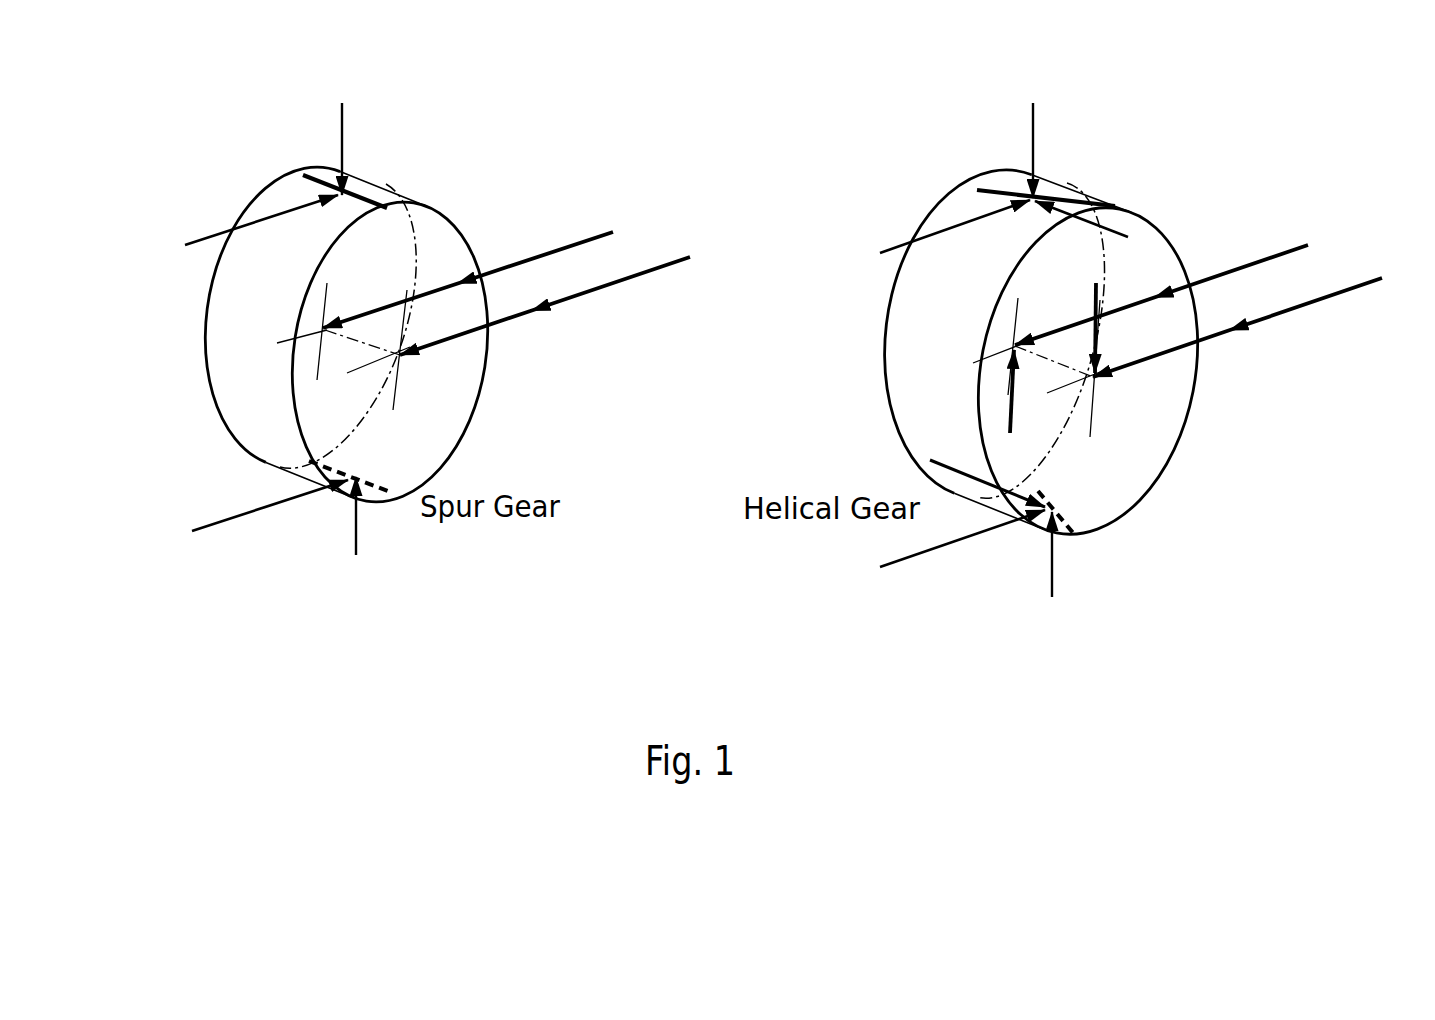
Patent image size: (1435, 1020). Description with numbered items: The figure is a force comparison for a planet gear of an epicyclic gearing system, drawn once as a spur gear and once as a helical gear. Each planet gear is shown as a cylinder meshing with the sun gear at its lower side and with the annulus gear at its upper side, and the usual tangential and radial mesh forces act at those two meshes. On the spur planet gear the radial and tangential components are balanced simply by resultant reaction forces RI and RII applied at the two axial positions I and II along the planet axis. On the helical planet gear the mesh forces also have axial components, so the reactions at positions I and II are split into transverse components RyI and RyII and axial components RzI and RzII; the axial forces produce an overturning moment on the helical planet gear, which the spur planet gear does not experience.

The planet gear axis position I is at (654, 339).
The planet gear axis position II is at (733, 363).
The resultant reaction force RI is at (474, 264).
The resultant reaction force RII is at (547, 306).
The transverse reaction force RyI is at (1186, 286).
The transverse reaction force RyII is at (1246, 327).
The axial reaction force RzI is at (1034, 404).
The axial reaction force RzII is at (1103, 311).